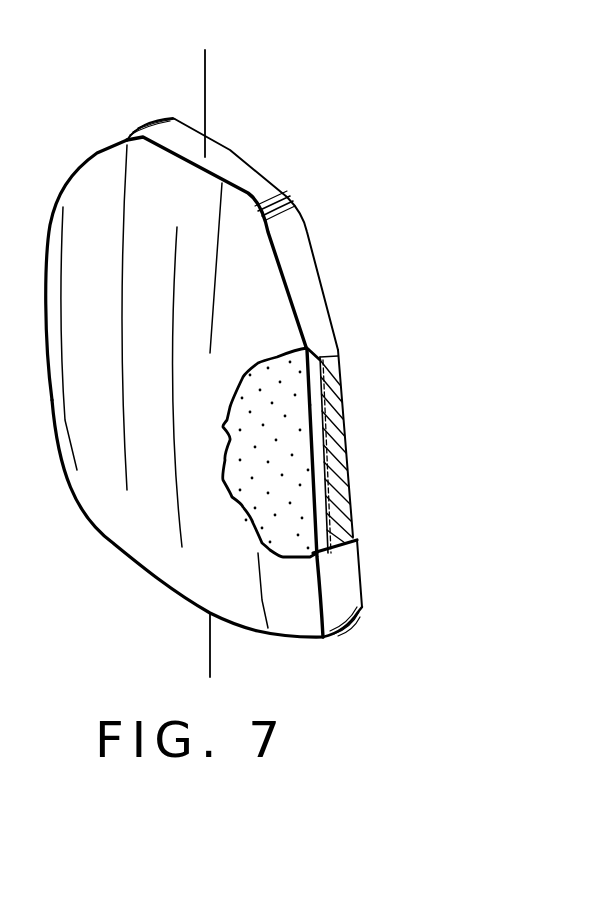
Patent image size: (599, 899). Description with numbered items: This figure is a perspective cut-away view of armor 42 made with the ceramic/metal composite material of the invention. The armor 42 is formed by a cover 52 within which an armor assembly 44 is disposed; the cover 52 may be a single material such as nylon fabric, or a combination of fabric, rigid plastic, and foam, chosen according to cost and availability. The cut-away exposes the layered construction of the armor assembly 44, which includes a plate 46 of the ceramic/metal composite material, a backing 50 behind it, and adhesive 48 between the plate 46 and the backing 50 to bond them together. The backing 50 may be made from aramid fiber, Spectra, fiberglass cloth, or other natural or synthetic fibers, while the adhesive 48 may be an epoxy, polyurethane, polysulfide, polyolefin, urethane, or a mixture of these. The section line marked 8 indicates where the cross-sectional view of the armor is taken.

The section line 8- 8 is at (163, 45).
The armor 42 is at (257, 157).
The armor assembly 44 is at (280, 545).
The plate 46 is at (343, 497).
The adhesive 48 is at (327, 410).
The backing 50 is at (342, 458).
The cover 52 is at (317, 307).